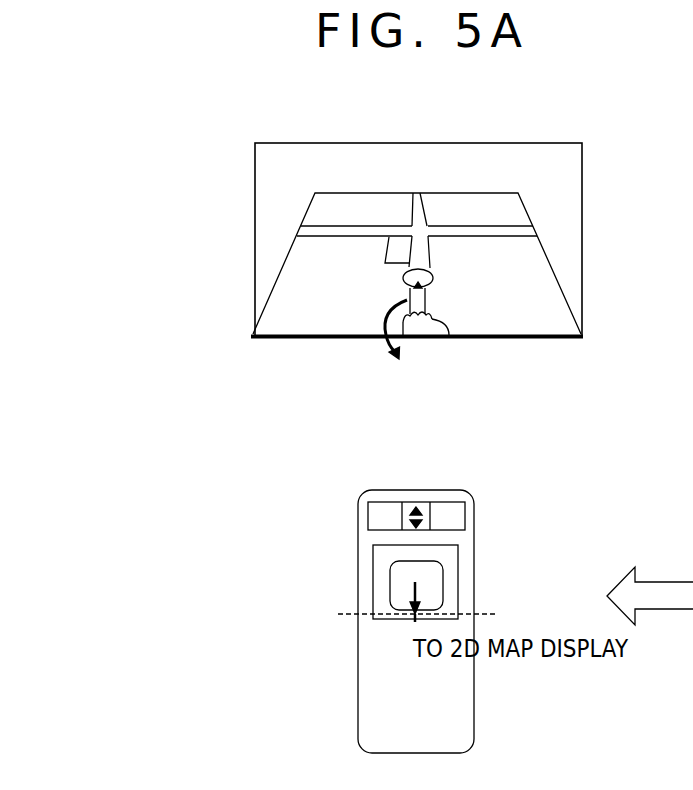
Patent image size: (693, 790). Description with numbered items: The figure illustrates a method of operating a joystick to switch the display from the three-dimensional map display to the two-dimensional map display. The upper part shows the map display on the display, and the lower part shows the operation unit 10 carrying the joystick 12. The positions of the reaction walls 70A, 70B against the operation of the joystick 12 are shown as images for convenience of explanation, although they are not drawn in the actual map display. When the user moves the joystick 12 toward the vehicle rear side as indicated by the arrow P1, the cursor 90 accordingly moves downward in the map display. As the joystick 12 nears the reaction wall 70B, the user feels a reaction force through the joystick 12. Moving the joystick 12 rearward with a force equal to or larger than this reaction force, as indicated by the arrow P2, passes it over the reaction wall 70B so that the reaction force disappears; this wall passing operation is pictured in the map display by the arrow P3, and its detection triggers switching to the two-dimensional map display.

The reaction wall 70B is at (338, 613).
The reaction wall 70A is at (650, 572).
The cursor 90 is at (444, 339).
The arrow P3 is at (397, 361).
The operation unit 10 is at (388, 480).
The joystick 12 is at (443, 578).
The arrow P1 is at (414, 584).
The arrow P2 is at (416, 622).